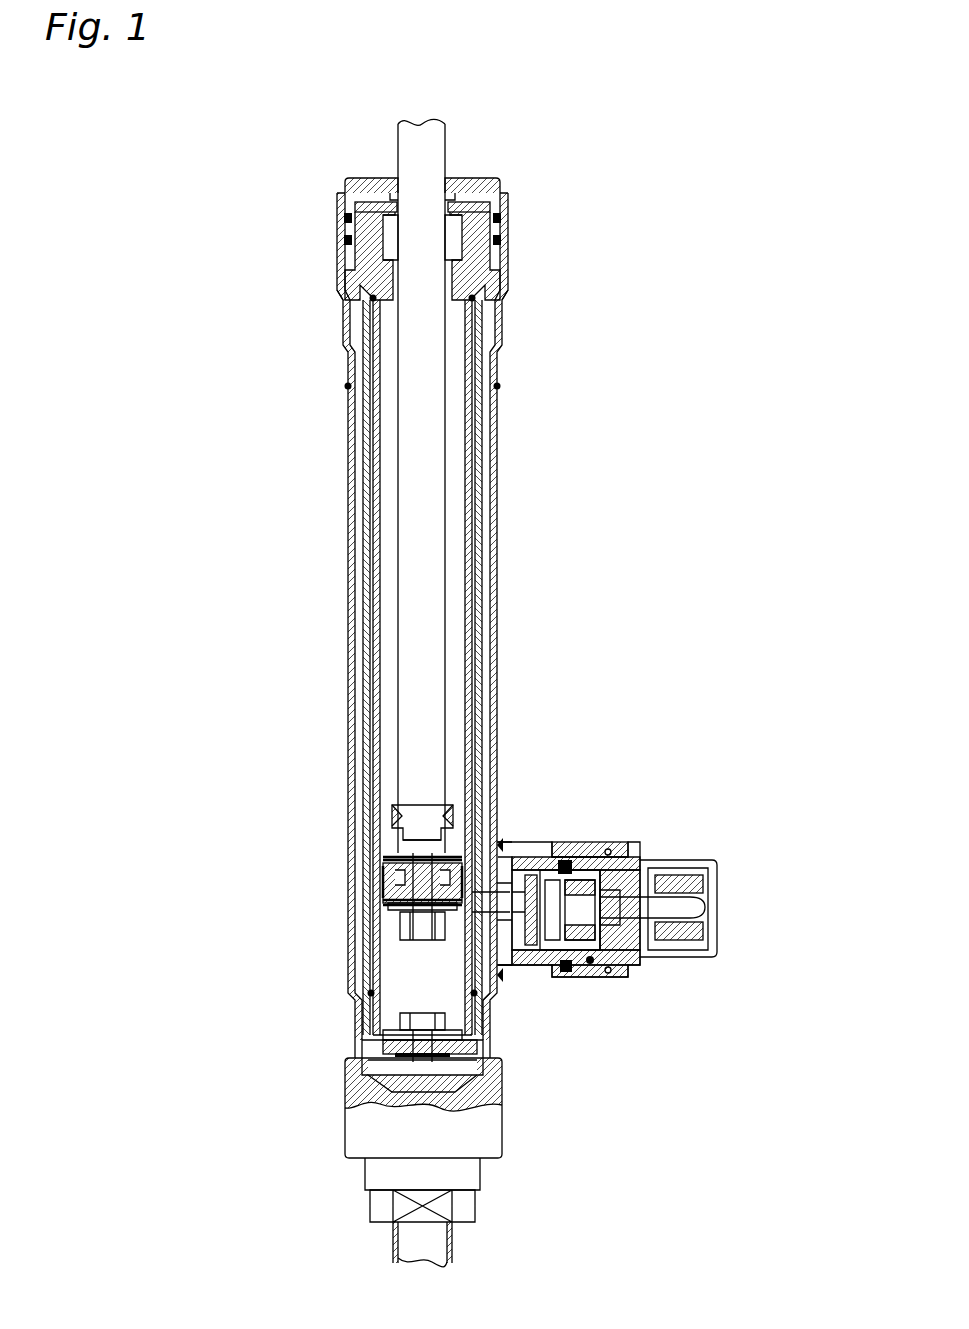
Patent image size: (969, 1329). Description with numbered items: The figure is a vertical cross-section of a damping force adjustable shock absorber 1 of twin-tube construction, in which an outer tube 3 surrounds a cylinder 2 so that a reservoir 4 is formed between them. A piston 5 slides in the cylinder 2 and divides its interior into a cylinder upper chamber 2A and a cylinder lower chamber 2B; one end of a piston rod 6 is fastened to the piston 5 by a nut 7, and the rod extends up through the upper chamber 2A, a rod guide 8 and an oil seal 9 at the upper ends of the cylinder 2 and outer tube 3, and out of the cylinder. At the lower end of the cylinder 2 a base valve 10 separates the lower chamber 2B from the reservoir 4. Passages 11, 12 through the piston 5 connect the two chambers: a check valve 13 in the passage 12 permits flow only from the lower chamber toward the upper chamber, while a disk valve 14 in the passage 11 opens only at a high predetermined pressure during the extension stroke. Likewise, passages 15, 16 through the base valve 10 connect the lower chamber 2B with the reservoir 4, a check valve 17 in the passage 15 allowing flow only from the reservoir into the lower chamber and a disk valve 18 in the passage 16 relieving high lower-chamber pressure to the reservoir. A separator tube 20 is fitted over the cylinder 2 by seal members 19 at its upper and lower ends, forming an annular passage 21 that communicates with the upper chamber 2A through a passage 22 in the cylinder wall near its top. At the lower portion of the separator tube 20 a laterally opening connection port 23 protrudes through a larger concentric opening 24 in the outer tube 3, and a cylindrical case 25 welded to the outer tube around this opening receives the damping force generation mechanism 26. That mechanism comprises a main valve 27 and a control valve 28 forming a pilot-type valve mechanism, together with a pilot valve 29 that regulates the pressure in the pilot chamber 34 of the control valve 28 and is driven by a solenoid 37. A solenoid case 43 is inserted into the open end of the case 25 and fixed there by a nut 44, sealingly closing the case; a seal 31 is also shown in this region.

The damping force adjustable shock absorber 1 is at (675, 161).
The cylinder 2 is at (494, 415).
The cylinder upper chamber 2A is at (386, 676).
The cylinder lower chamber 2B is at (400, 962).
The outer tube 3 is at (497, 458).
The reservoir 4 is at (357, 482).
The piston 5 is at (395, 882).
The piston rod 6 is at (410, 147).
The nut 7 is at (400, 930).
The rod guide 8 is at (375, 269).
The oil seal 9 is at (466, 188).
The base valve 10 is at (500, 1057).
The passage 11 is at (390, 868).
The passage 12 is at (477, 882).
The check valve 13 is at (493, 835).
The disk valve 14 is at (405, 912).
The passage 15 is at (345, 1085).
The passage 16 is at (502, 1120).
The check valve 17 is at (390, 1045).
The disk valve 18 is at (483, 1162).
The seal member 19 is at (350, 293).
The separator tube 20 is at (366, 577).
The annular passage 21 is at (493, 517).
The passage 22 is at (502, 340).
The connection port 23 is at (537, 857).
The opening 24 is at (501, 976).
The case 25 is at (552, 857).
The damping force generation mechanism 26 is at (662, 855).
The main valve 27 is at (587, 857).
The control valve 28 is at (659, 820).
The pilot valve 29 is at (655, 870).
The seal 31 is at (567, 978).
The pilot chamber 34 is at (590, 978).
The solenoid 37 is at (718, 892).
The solenoid case 43 is at (640, 970).
The nut 44 is at (617, 977).